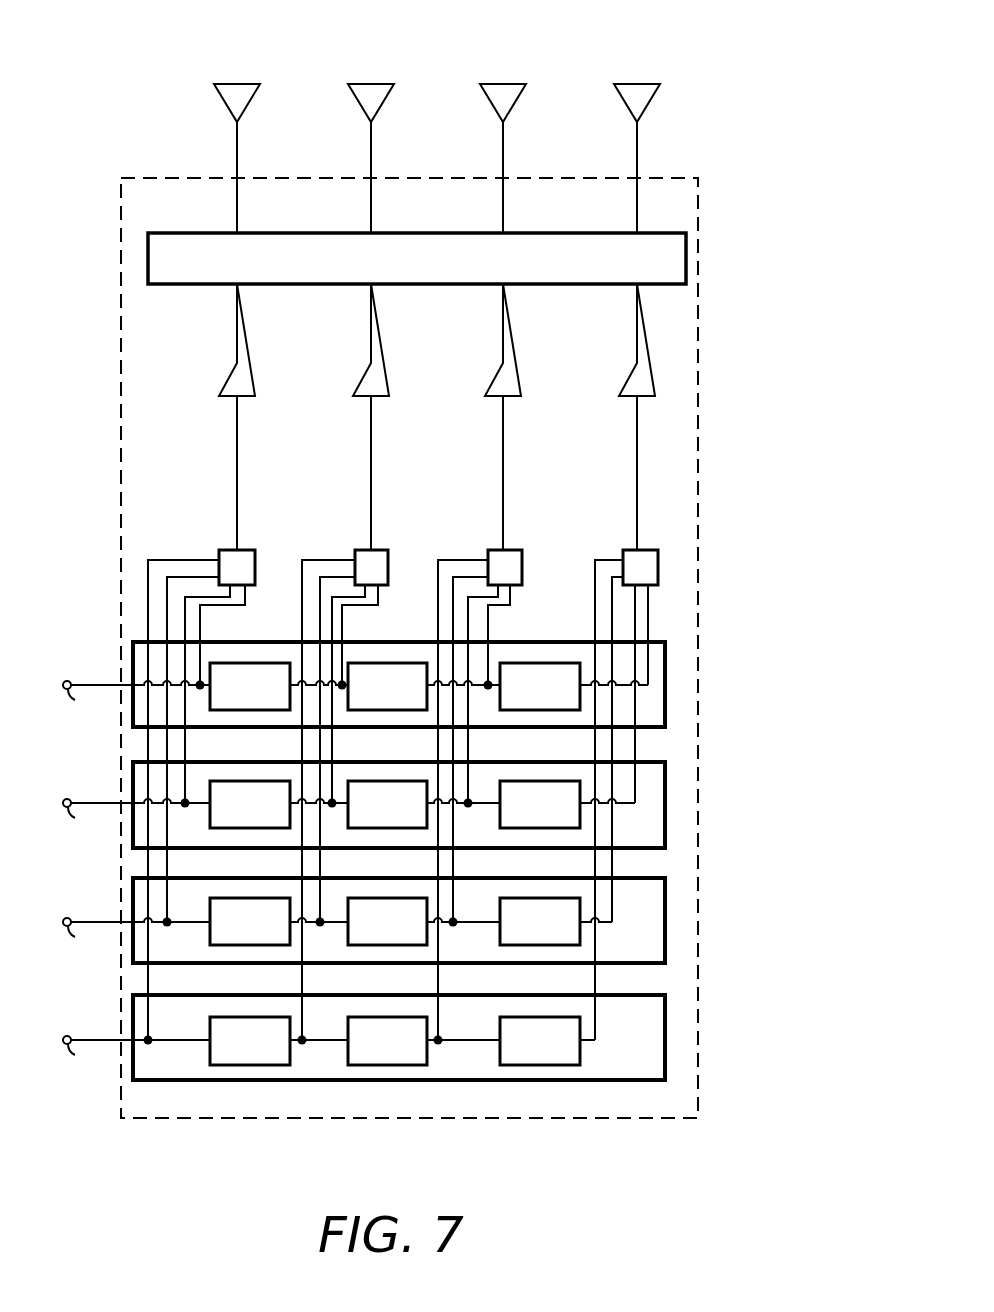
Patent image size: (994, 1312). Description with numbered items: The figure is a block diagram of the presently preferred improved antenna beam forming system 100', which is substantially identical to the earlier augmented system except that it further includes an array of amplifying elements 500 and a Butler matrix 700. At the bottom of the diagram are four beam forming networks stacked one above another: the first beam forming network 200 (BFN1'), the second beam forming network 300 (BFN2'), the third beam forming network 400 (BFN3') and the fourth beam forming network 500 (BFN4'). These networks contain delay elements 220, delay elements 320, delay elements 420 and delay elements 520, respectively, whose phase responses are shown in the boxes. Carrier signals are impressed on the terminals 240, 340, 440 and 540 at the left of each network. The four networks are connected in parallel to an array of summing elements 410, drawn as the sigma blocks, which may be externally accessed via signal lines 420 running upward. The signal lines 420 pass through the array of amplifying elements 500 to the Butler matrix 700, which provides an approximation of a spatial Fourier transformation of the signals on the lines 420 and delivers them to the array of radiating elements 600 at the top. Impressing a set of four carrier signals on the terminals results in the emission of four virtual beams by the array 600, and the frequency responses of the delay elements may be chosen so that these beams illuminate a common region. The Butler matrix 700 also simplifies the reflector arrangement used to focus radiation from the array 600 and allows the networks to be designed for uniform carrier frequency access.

The improved antenna beam forming system 100' is at (383, 573).
The array of radiating elements 600 is at (652, 121).
The Butler matrix 700 is at (686, 262).
The array of amplifying elements / fourth beam forming network (BFN4') 500 is at (655, 387).
The signal lines / delay elements 420 is at (528, 945).
The summing elements 410 is at (224, 550).
The first beam forming network (BFN1') 200 is at (446, 700).
The delay elements 220 is at (268, 728).
The terminal 240 is at (81, 701).
The second beam forming network (BFN2') 300 is at (438, 818).
The delay elements 320 is at (262, 848).
The terminal 340 is at (76, 820).
The third beam forming network (BFN3') 400 is at (443, 926).
The terminal 440 is at (76, 946).
The delay elements 520 is at (218, 1065).
The terminal 540 is at (76, 1067).